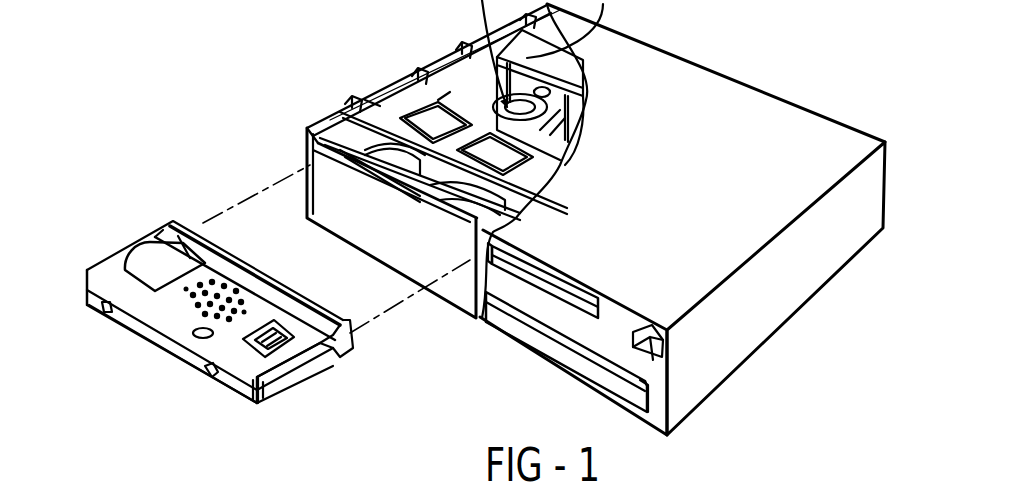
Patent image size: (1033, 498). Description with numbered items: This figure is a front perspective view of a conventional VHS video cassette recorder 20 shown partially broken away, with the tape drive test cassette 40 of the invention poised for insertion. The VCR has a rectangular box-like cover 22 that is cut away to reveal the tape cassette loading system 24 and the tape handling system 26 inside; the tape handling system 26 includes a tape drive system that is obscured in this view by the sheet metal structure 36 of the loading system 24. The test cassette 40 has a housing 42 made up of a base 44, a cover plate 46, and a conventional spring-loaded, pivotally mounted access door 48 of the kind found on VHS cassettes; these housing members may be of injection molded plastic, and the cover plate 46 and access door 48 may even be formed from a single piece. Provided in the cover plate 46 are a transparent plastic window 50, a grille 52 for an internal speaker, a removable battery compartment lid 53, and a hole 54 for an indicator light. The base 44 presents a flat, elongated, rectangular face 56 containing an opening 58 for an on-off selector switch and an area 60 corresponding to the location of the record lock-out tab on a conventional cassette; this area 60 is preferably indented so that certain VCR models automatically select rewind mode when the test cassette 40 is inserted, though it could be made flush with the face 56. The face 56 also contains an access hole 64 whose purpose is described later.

The video cassette recorder 20 is at (816, 318).
The cover 22 is at (698, 82).
The loading system 24 is at (415, 103).
The tape handling system 26 is at (477, 93).
The sheet metal structure 36 is at (393, 127).
The test cassette 40 is at (322, 405).
The housing 42 is at (80, 277).
The base 44 is at (312, 378).
The cover plate 46 is at (127, 262).
The access door 48 is at (185, 222).
The transparent plastic window 50 is at (183, 263).
The grille 52 is at (233, 297).
The battery compartment lid 53 is at (292, 340).
The hole 54 is at (198, 340).
The face 56 is at (257, 402).
The opening 58 is at (215, 382).
The area 60 is at (105, 312).
The access hole 64 is at (142, 330).